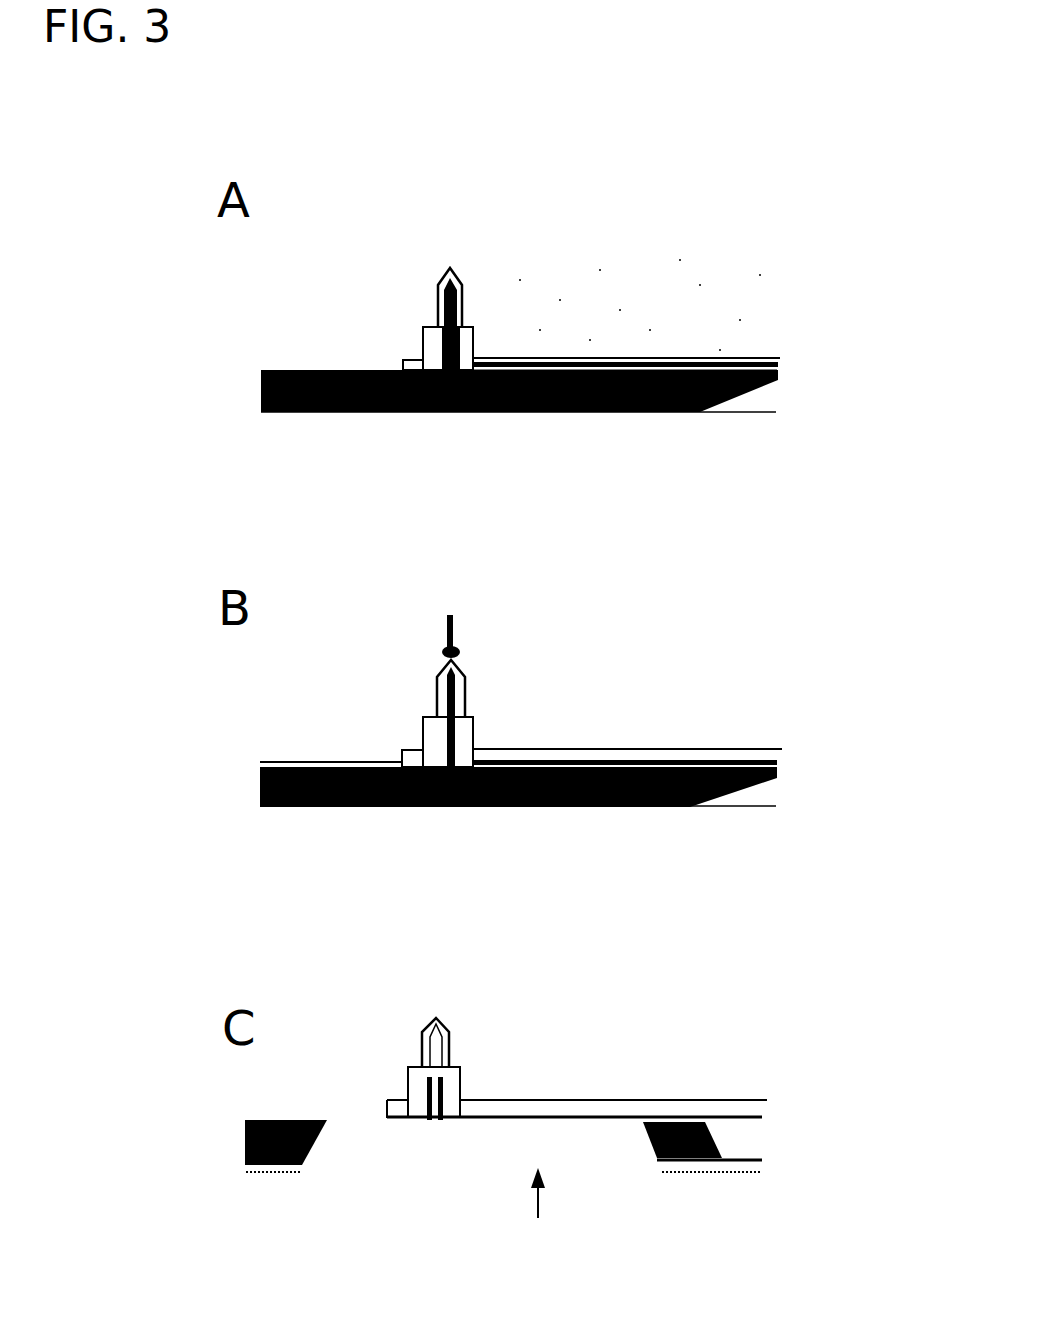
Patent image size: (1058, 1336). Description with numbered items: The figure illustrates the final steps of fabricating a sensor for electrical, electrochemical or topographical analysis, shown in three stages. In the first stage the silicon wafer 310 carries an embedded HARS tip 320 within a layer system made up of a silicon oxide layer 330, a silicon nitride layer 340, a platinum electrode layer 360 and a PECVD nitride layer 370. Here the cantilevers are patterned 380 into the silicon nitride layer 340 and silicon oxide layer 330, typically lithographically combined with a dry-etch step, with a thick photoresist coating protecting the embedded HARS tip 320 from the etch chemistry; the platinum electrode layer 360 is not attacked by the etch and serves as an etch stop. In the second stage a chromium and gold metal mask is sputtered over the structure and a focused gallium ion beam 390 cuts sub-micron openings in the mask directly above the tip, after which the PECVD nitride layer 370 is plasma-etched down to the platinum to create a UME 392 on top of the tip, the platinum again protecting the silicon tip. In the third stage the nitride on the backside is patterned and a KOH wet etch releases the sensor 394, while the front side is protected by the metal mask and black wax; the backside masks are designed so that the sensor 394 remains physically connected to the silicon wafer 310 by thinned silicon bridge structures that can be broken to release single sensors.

The silicon wafer 310 is at (778, 393).
The HARS tip 320 is at (448, 303).
The silicon oxide layer 330 is at (717, 372).
The silicon nitride layer 340 is at (617, 372).
The electrode layer 360 is at (551, 362).
The PECVD nitride layer 370 is at (640, 358).
The patterned cantilevers 380 is at (783, 265).
The focused gallium ion beam 390 is at (453, 632).
The UME 392 is at (458, 1020).
The sensor 394 is at (552, 1213).